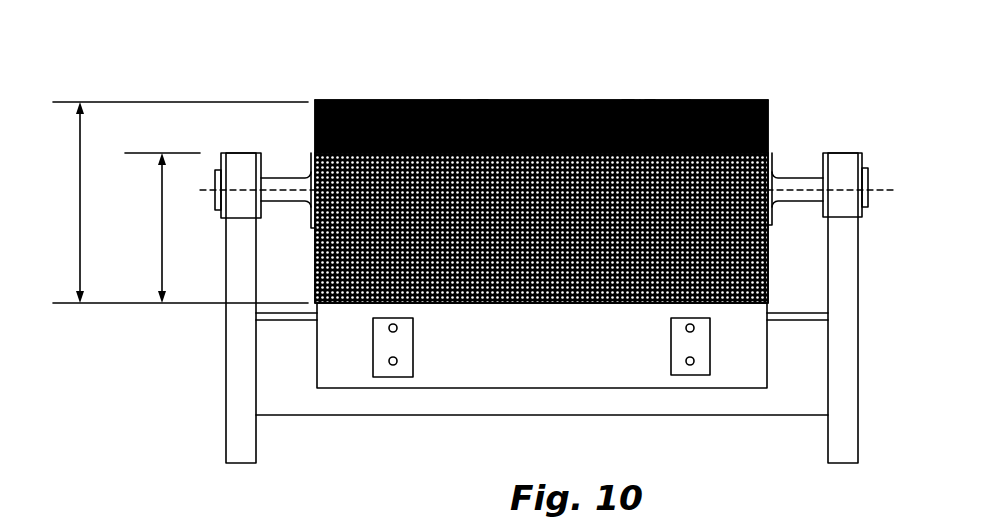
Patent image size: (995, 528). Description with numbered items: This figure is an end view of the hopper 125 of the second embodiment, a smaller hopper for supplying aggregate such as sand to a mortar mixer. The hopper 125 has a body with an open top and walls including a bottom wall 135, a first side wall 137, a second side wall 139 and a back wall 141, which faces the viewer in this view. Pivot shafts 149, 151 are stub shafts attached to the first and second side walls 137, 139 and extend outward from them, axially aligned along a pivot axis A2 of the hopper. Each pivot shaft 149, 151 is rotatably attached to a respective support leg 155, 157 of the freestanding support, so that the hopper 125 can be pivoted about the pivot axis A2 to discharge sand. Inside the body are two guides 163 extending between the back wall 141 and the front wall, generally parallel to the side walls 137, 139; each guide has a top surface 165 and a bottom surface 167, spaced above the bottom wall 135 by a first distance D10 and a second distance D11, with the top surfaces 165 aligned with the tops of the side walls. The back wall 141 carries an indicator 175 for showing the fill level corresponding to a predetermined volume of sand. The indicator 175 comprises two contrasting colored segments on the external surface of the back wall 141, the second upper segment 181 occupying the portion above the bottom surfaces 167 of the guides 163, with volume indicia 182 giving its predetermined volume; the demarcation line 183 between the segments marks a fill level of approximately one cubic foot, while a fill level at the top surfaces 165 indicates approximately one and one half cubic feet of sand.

The hopper 125 is at (366, 98).
The bottom wall 135 is at (487, 305).
The first side wall 137 is at (315, 142).
The second side wall 139 is at (768, 128).
The back wall 141 is at (316, 258).
The pivot shaft 149 is at (273, 182).
The pivot shaft 151 is at (797, 185).
The support leg 155 is at (233, 372).
The support leg 157 is at (845, 293).
The guide 163 is at (483, 100).
The top surface 165 is at (455, 100).
The bottom surface 167 is at (447, 100).
The indicator 175 is at (597, 305).
The second upper segment 181 is at (378, 100).
The volume indicia 182 is at (576, 98).
The demarcation line 183 is at (748, 100).
The first distance D10 is at (80, 240).
The second distance D11 is at (162, 255).
The pivot axis A2 is at (882, 190).